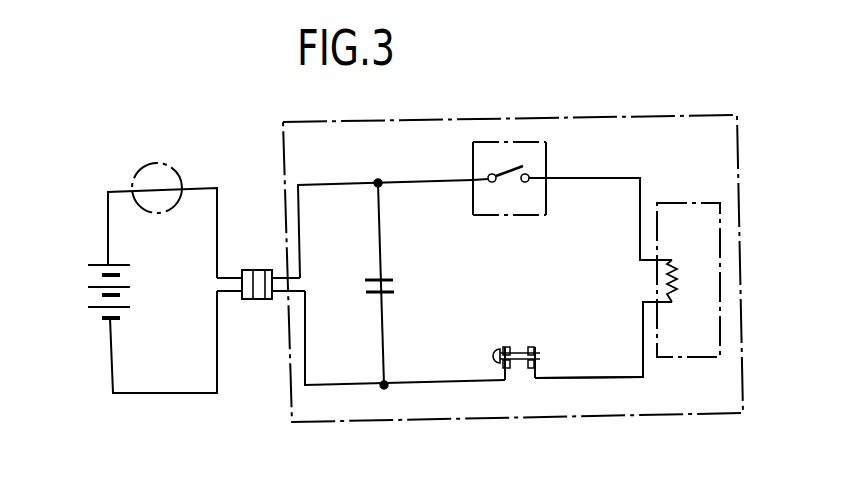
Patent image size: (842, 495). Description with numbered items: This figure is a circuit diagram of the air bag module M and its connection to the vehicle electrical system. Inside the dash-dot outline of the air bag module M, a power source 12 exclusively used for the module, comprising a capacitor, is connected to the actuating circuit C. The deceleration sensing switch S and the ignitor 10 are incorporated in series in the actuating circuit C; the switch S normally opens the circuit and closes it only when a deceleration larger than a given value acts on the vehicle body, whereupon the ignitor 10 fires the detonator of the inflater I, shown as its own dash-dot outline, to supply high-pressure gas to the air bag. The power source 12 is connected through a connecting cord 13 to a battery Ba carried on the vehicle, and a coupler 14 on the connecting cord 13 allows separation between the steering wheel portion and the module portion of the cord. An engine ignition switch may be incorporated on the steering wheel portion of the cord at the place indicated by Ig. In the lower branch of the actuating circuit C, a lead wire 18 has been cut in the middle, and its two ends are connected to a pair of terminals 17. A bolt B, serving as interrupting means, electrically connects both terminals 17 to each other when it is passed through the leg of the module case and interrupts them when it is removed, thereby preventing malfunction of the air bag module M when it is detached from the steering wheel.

The air bag module M is at (653, 114).
The battery Ba is at (92, 310).
The ignition switch Ig is at (155, 163).
The coupler 14 is at (250, 300).
The connecting cord 13 is at (284, 276).
The actuating circuit C is at (426, 371).
The power source 12 is at (390, 279).
The deceleration sensing switch S is at (495, 140).
The inflater I is at (720, 278).
The ignitor 10 is at (675, 283).
The terminals 17 is at (531, 346).
The bolt B is at (493, 357).
The lead wire 18 is at (580, 378).